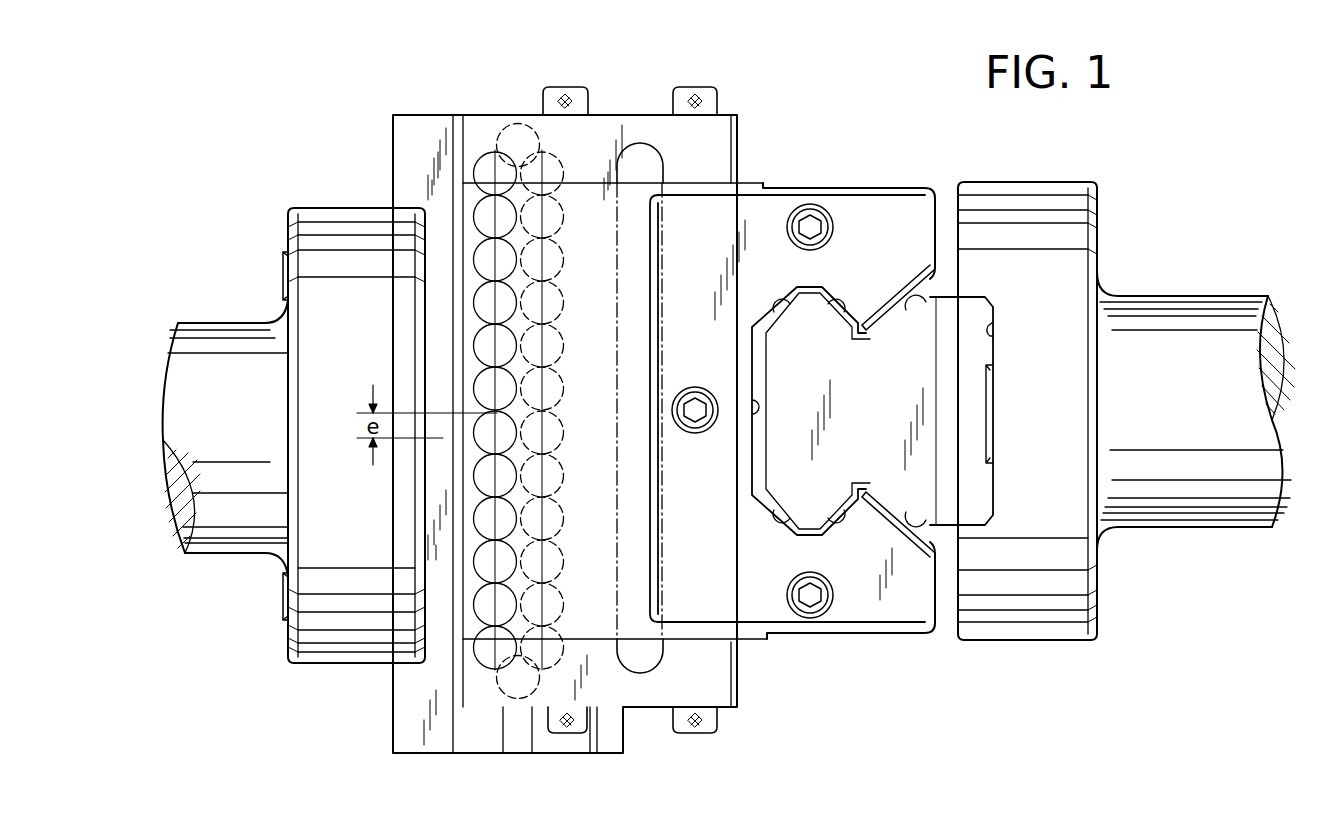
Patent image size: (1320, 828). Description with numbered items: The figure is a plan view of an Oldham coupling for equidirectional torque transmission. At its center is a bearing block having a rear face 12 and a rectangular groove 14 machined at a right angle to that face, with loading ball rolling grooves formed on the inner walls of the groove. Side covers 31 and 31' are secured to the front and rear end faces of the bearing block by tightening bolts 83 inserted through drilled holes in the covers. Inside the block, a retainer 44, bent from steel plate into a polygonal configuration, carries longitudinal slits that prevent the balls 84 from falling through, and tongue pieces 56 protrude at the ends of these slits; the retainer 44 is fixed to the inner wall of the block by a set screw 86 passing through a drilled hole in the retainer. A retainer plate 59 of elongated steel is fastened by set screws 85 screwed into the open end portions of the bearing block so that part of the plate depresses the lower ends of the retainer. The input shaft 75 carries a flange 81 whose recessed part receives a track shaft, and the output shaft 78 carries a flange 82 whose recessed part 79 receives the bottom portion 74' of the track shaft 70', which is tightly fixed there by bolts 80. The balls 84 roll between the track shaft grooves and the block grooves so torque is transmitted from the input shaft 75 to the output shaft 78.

The rear face 12 is at (875, 185).
The rectangular groove 14 is at (752, 468).
The side cover 31 is at (582, 405).
The side cover 31' is at (584, 737).
The retainer 44 is at (750, 345).
The tongue piece 56 is at (780, 302).
The retainer plate 59 is at (886, 333).
The track shaft 70' is at (968, 381).
The bottom portion 74' is at (1022, 325).
The input shaft 75 is at (200, 323).
The output shaft 78 is at (1188, 296).
The recessed part 79 is at (996, 416).
The bolt 80 is at (283, 264).
The flange 81 is at (343, 208).
The flange 82 is at (1025, 200).
The tightening bolt 83 is at (562, 100).
The ball 84 is at (521, 132).
The set screw 85 is at (916, 306).
The set screw 86 is at (764, 407).